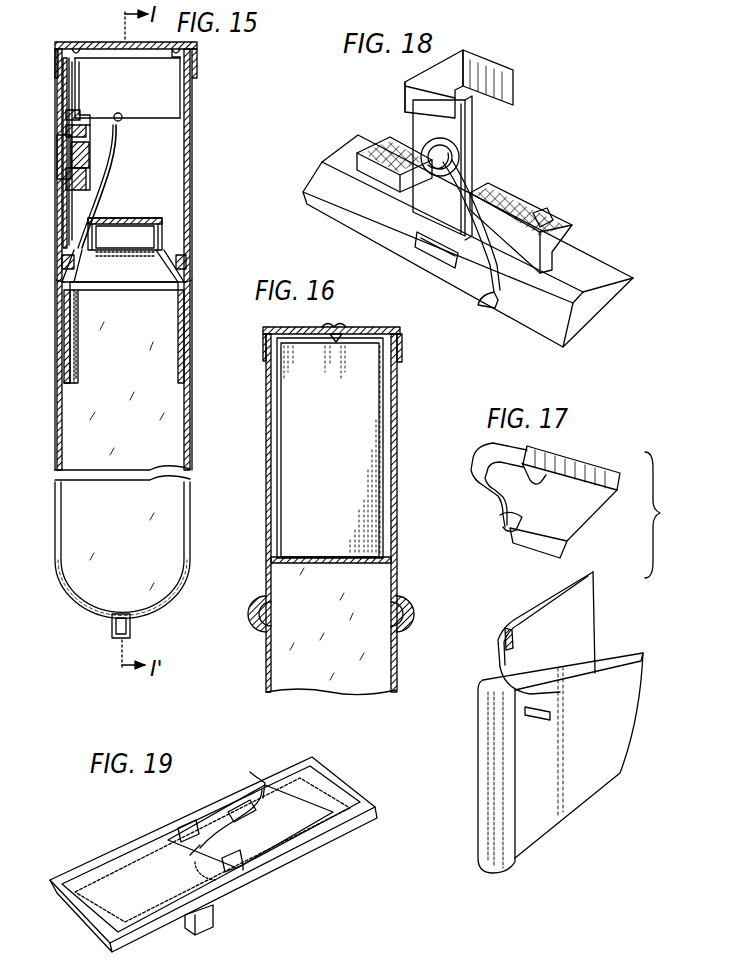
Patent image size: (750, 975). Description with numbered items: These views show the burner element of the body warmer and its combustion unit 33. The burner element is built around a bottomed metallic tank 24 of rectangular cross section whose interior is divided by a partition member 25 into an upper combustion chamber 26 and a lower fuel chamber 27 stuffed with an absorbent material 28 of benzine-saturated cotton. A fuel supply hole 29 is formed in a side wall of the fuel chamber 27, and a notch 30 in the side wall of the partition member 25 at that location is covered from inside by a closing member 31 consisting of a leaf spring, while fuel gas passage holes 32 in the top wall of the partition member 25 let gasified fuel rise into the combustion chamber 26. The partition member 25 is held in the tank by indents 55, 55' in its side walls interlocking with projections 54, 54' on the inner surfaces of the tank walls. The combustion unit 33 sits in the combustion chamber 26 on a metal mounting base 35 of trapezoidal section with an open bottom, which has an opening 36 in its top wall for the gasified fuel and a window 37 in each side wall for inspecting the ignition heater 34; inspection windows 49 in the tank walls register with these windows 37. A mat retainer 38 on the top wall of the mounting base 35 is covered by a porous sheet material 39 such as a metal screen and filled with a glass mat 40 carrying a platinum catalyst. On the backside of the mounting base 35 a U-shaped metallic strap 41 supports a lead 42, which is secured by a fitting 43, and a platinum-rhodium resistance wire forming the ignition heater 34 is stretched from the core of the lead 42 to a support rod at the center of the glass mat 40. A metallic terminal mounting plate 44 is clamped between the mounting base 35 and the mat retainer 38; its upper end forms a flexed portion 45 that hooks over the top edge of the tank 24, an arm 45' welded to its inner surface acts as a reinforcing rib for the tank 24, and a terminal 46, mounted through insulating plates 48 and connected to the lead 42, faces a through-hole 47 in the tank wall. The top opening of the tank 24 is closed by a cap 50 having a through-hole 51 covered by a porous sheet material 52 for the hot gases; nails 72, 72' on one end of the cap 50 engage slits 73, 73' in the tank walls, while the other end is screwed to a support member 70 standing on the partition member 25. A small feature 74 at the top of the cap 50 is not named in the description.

In FIG. 15, the tank 24 is at (57, 466).
In FIG. 17, the tank 24 is at (590, 610).
In FIG. 15, the partition member 25 is at (190, 305).
In FIG. 16, the partition member 25 is at (300, 560).
In FIG. 15, the combustion chamber 26 is at (186, 166).
In FIG. 16, the combustion chamber 26 is at (372, 386).
In FIG. 15, the fuel chamber 27 is at (80, 405).
In FIG. 16, the fuel chamber 27 is at (300, 572).
In FIG. 15, the absorbent material 28 is at (72, 435).
In FIG. 16, the absorbent material 28 is at (280, 668).
In FIG. 15, the fuel supply hole 29 is at (64, 357).
In FIG. 15, the notch 30 is at (62, 330).
In FIG. 15, the closing member 31 is at (74, 342).
In FIG. 15, the fuel gas passage holes 32 is at (140, 288).
In FIG. 15, the combustion unit 33 is at (165, 236).
In FIG. 18, the combustion unit 33 is at (578, 240).
In FIG. 15, the ignition heater 34 is at (110, 258).
In FIG. 19, the ignition heater 34 is at (215, 885).
In FIG. 18, the mounting base 35 is at (598, 292).
In FIG. 19, the mounting base 35 is at (345, 832).
In FIG. 19, the opening 36 is at (285, 800).
In FIG. 15, the window 37 is at (62, 268).
In FIG. 18, the window 37 is at (430, 252).
In FIG. 19, the window 37 is at (180, 830).
In FIG. 18, the mat retainer 38 is at (553, 215).
In FIG. 15, the porous sheet material 39 is at (118, 218).
In FIG. 18, the porous sheet material 39 is at (505, 196).
In FIG. 15, the glass mat 40 is at (145, 222).
In FIG. 19, the glass mat 40 is at (290, 840).
In FIG. 19, the metallic strap 41 is at (248, 870).
In FIG. 15, the lead 42 is at (118, 136).
In FIG. 18, the lead 42 is at (480, 290).
In FIG. 19, the lead 42 is at (248, 806).
In FIG. 19, the fitting 43 is at (235, 810).
In FIG. 15, the terminal mounting plate 44 is at (79, 92).
In FIG. 18, the terminal mounting plate 44 is at (466, 128).
In FIG. 15, the flexed portion 45 is at (43, 153).
In FIG. 18, the flexed portion 45 is at (405, 84).
In FIG. 15, the arm 45' is at (212, 87).
In FIG. 18, the arm 45' is at (513, 77).
In FIG. 19, the arm 45' is at (226, 927).
In FIG. 15, the terminal 46 is at (57, 150).
In FIG. 18, the terminal 46 is at (426, 150).
In FIG. 15, the through-hole 47 is at (62, 180).
In FIG. 15, the insulating plates 48 is at (66, 115).
In FIG. 15, the inspection windows 49 is at (60, 282).
In FIG. 15, the cap 50 is at (198, 60).
In FIG. 16, the cap 50 is at (402, 344).
In FIG. 17, the cap 50 is at (580, 455).
In FIG. 15, the through-hole 51 is at (115, 42).
In FIG. 15, the porous sheet material 52 is at (138, 54).
In FIG. 16, the projection 54 is at (249, 623).
In FIG. 16, the projection 54' is at (418, 624).
In FIG. 16, the indent 55 is at (247, 609).
In FIG. 16, the indent 55' is at (421, 612).
In FIG. 16, the support member 70 is at (378, 404).
In FIG. 17, the nail 72 is at (548, 486).
In FIG. 17, the nail 72' is at (494, 528).
In FIG. 17, the slit 73 is at (539, 736).
In FIG. 17, the slit 73' is at (495, 615).
In FIG. 16, the projection 74 is at (344, 327).